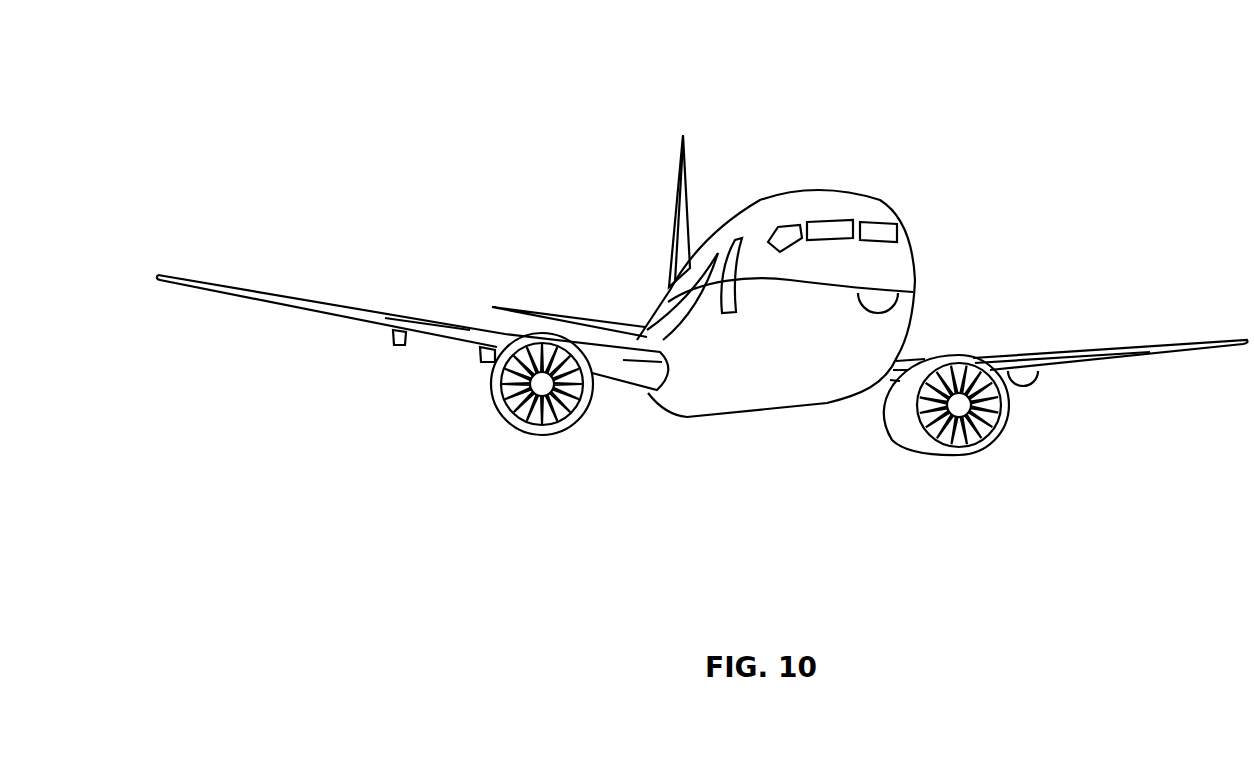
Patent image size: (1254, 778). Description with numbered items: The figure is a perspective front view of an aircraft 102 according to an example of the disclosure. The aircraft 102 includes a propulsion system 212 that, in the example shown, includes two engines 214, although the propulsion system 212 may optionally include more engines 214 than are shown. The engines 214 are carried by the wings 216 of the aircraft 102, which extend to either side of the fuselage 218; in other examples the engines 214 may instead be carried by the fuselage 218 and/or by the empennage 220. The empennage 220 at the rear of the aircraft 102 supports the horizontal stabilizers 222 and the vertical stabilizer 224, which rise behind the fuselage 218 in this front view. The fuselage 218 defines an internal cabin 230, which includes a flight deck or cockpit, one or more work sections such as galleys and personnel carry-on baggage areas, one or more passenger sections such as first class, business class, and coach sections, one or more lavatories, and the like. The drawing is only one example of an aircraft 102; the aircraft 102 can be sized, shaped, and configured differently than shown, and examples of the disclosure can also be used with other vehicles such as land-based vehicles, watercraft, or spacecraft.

The aircraft 102 is at (429, 77).
The propulsion system 212 is at (1056, 447).
The engines 214 is at (537, 433).
The wings 216 is at (302, 300).
The fuselage 218 is at (918, 252).
The empennage 220 is at (668, 292).
The horizontal stabilizers 222 is at (530, 312).
The vertical stabilizer 224 is at (678, 178).
The internal cabin 230 is at (890, 232).